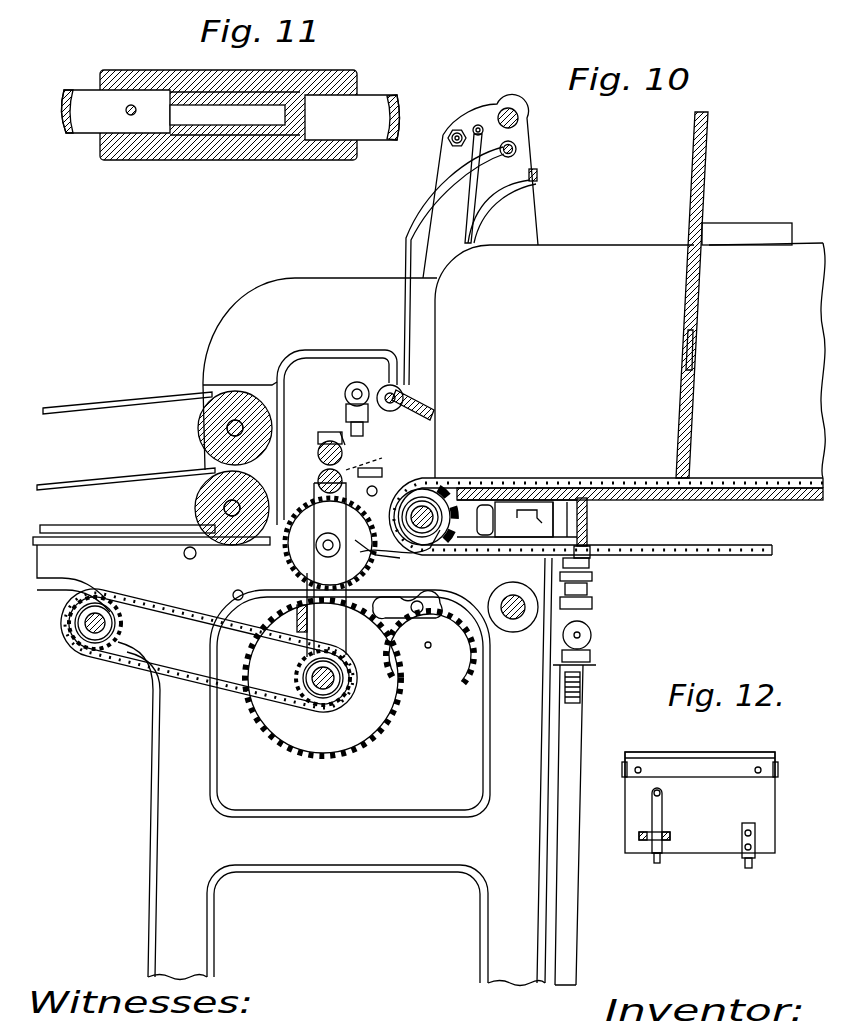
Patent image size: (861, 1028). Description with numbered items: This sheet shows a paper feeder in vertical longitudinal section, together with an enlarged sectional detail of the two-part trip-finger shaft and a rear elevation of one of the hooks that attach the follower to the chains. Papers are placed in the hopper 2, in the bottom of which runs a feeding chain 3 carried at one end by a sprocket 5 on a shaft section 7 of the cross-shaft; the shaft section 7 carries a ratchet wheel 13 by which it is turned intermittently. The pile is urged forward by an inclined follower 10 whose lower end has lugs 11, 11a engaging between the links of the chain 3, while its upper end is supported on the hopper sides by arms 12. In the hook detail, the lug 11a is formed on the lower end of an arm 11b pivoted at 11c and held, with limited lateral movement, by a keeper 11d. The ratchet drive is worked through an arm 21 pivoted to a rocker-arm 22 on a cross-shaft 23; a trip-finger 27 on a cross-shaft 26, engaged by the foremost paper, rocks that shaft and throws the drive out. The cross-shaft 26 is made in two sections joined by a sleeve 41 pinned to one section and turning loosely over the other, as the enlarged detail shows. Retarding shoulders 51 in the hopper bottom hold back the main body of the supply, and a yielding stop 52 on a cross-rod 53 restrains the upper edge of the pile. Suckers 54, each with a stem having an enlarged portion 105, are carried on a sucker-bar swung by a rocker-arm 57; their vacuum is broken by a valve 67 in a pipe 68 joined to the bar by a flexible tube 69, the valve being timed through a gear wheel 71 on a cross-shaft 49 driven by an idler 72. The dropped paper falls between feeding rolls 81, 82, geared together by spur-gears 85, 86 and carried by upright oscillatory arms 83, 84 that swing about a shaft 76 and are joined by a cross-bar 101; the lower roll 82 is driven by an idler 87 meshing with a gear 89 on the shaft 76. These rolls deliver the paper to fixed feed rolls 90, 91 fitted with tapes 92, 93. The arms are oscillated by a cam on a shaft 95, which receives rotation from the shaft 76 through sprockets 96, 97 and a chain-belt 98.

In FIG. 10, the hopper 2 is at (822, 252).
In FIG. 10, the feeding chain 3 is at (783, 478).
In FIG. 10, the sprocket 5 is at (434, 540).
In FIG. 10, the shaft section 7 is at (442, 496).
In FIG. 10, the follower 10 is at (703, 186).
In FIG. 12, the follower 10 is at (735, 753).
In FIG. 10, the lug 11 is at (693, 372).
In FIG. 12, the lug 11 is at (750, 868).
In FIG. 12, the lug 11a is at (656, 863).
In FIG. 12, the arm 11b is at (663, 820).
In FIG. 12, the pivot 11c is at (654, 794).
In FIG. 12, the keeper 11d is at (668, 838).
In FIG. 12, the arm 12 is at (626, 768).
In FIG. 10, the ratchet wheel 13 is at (386, 490).
In FIG. 10, the arm 21 is at (470, 174).
In FIG. 10, the rocker-arm 22 is at (488, 112).
In FIG. 10, the cross-shaft 23 is at (508, 108).
In FIG. 11, the cross-shaft 26 is at (97, 120).
In FIG. 10, the cross-shaft 26 is at (517, 149).
In FIG. 10, the trip-finger 27 is at (403, 222).
In FIG. 11, the sleeve 41 is at (320, 82).
In FIG. 10, the cross-shaft 49 is at (525, 604).
In FIG. 10, the retarding shoulder 51 is at (426, 512).
In FIG. 10, the yielding stop 52 is at (472, 240).
In FIG. 10, the cross-rod 53 is at (538, 176).
In FIG. 10, the sucker 54 is at (318, 483).
In FIG. 10, the rocker-arm 57 is at (360, 383).
In FIG. 10, the valve 67 is at (592, 632).
In FIG. 10, the pipe 68 is at (583, 692).
In FIG. 10, the flexible tube 69 is at (410, 403).
In FIG. 10, the gear wheel 71 is at (466, 658).
In FIG. 10, the idler 72 is at (429, 648).
In FIG. 10, the shaft 76 is at (323, 690).
In FIG. 10, the feeding roll 81 is at (318, 453).
In FIG. 10, the feeding roll 82 is at (345, 569).
In FIG. 10, the oscillatory arm 83 is at (324, 548).
In FIG. 10, the oscillatory arm 84 is at (318, 518).
In FIG. 10, the spur-gear 85 is at (383, 460).
In FIG. 10, the spur-gear 86 is at (379, 472).
In FIG. 10, the idler 87 is at (338, 434).
In FIG. 10, the gear 89 is at (388, 703).
In FIG. 10, the fixed feed roll 90 is at (206, 432).
In FIG. 10, the fixed feed roll 91 is at (203, 498).
In FIG. 10, the tape 92 is at (86, 410).
In FIG. 10, the tape 93 is at (96, 530).
In FIG. 10, the shaft 95 is at (93, 638).
In FIG. 10, the sprocket 96 is at (300, 672).
In FIG. 10, the sprocket 97 is at (110, 652).
In FIG. 10, the chain-belt 98 is at (150, 599).
In FIG. 10, the cross-bar 101 is at (295, 620).
In FIG. 10, the enlarged portion 105 is at (405, 414).